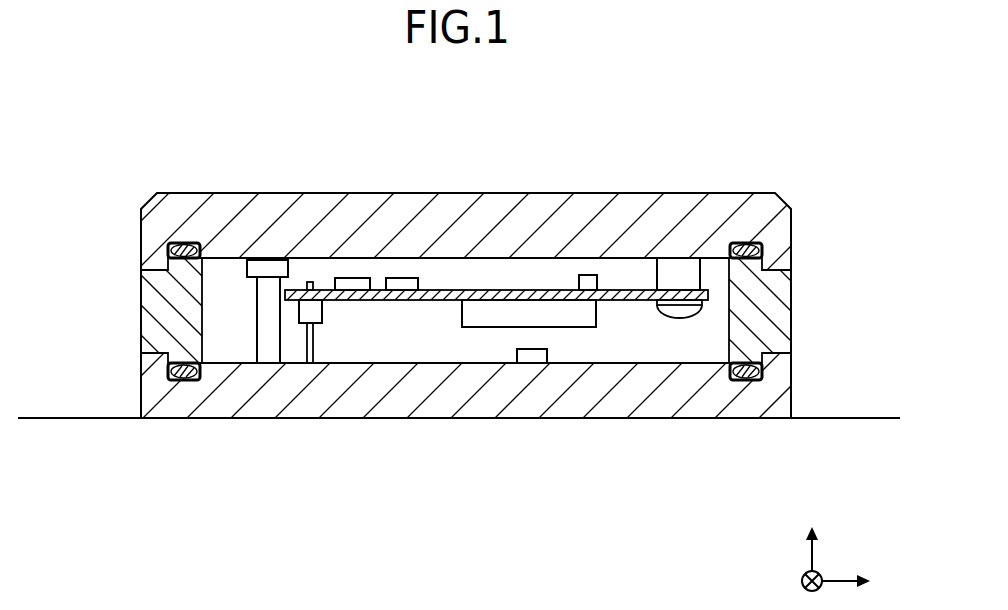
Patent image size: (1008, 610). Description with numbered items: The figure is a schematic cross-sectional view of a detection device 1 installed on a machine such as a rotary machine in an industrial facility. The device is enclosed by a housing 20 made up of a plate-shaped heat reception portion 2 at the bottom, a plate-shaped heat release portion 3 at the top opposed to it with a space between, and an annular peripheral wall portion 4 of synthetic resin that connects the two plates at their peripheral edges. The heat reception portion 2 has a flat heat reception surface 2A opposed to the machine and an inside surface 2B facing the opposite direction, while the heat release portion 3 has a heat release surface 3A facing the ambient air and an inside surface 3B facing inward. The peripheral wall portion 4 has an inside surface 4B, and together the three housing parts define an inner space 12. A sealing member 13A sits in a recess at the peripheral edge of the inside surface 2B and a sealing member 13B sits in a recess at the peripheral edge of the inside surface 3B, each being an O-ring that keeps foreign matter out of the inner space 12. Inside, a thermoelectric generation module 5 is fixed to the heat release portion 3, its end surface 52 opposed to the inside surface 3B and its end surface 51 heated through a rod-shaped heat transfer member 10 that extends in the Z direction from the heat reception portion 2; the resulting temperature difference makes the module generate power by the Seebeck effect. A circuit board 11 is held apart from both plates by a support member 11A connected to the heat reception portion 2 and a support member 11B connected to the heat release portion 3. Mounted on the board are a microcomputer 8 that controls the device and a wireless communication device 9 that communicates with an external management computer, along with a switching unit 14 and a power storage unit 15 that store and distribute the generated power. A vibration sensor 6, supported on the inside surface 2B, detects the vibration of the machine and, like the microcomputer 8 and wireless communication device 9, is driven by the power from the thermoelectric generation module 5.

The detection device 1 is at (784, 121).
The heat reception portion 2 is at (141, 385).
The heat reception surface 2A is at (583, 418).
The inside surface 2B is at (582, 363).
The heat release portion 3 is at (141, 227).
The heat release surface 3A is at (458, 193).
The inside surface 3B is at (478, 258).
The peripheral wall portion 4 is at (141, 310).
The inside surface 4B is at (734, 330).
The thermoelectric generation module 5 is at (268, 267).
The vibration sensor 6 is at (533, 355).
The microcomputer 8 is at (587, 313).
The wireless communication device 9 is at (588, 280).
The heat transfer member 10 is at (258, 357).
The circuit board 11 is at (622, 292).
The support member 11A is at (310, 340).
The support member 11B is at (695, 270).
The inner space 12 is at (498, 355).
The sealing member 13A is at (745, 372).
The sealing member 13B is at (745, 250).
The switching unit 14 is at (354, 280).
The power storage unit 15 is at (405, 280).
The housing 20 is at (70, 215).
The end surface 51 is at (268, 280).
The end surface 52 is at (286, 258).